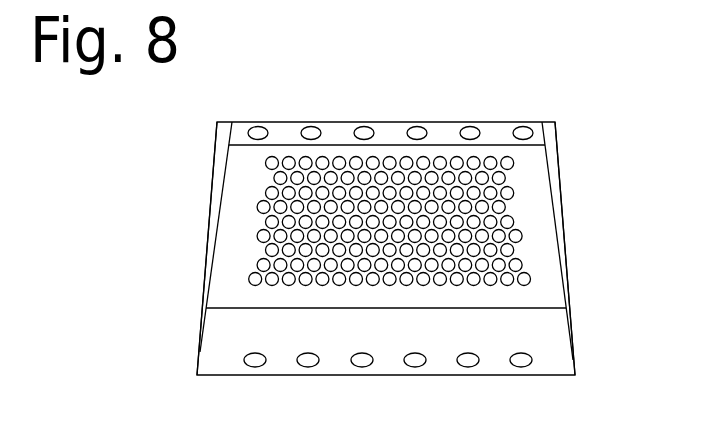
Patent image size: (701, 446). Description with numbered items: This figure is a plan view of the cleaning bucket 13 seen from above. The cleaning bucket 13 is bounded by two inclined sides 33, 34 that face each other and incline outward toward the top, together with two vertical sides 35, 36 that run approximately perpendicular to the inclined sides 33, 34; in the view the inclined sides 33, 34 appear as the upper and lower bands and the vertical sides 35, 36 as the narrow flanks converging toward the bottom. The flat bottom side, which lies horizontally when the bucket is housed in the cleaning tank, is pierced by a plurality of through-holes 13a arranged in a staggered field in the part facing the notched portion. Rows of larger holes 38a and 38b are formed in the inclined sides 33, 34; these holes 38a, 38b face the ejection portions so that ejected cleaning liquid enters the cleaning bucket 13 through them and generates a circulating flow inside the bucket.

The cleaning bucket 13 is at (401, 246).
The through-holes 13a is at (512, 199).
The inclined side 33 is at (385, 122).
The inclined side 34 is at (382, 375).
The vertical side 35 is at (207, 243).
The vertical side 36 is at (566, 240).
The holes 38a is at (466, 353).
The holes 38b is at (473, 126).